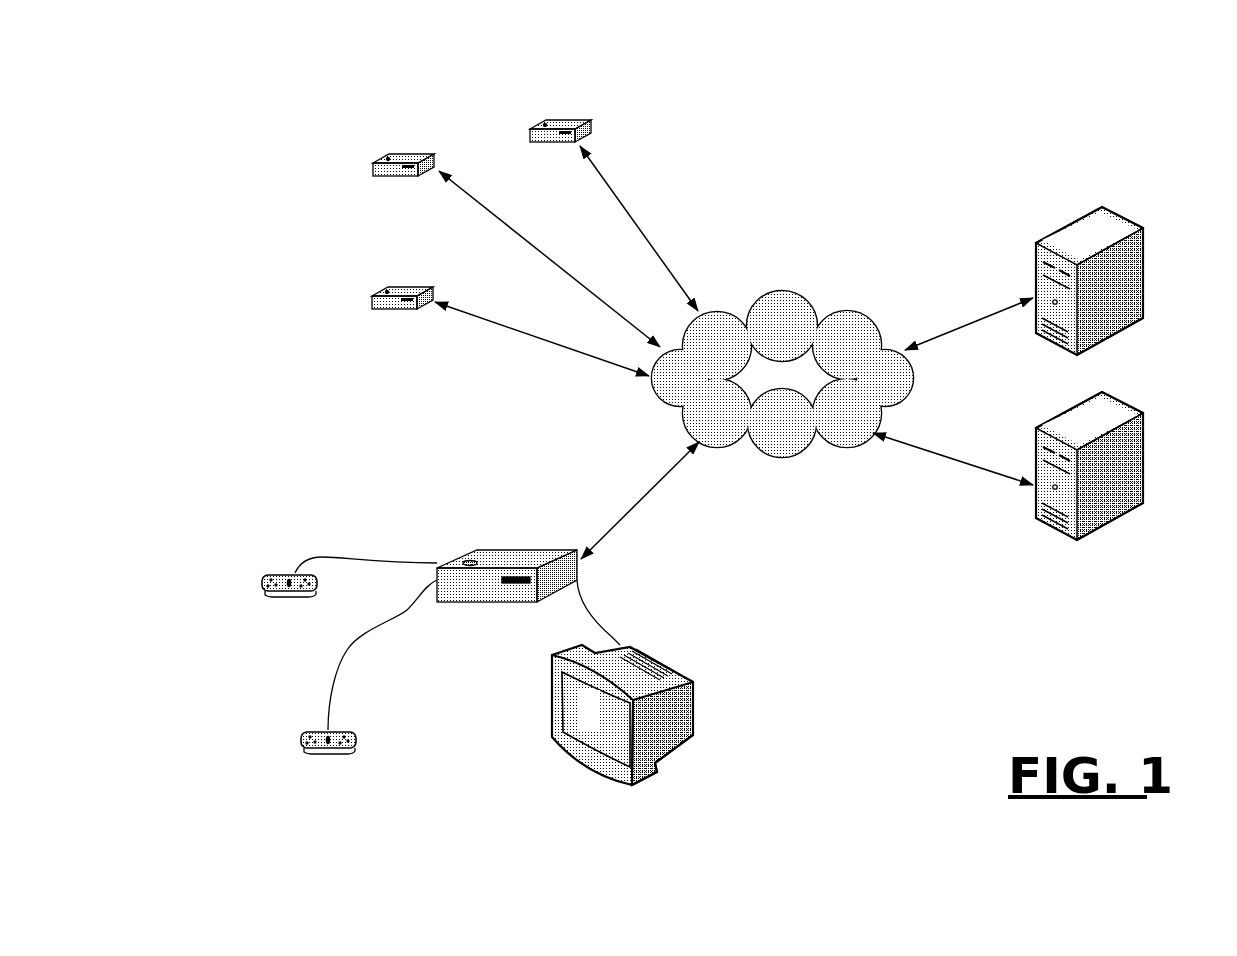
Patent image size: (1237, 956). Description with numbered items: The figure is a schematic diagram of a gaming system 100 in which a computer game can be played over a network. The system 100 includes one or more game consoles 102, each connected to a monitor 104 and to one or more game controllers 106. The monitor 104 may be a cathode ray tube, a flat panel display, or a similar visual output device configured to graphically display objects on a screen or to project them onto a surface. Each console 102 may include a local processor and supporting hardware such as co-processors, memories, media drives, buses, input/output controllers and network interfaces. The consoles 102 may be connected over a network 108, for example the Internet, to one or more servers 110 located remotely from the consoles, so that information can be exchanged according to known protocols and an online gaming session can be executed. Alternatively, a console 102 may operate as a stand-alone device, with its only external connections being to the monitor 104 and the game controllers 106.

The gaming system 100 is at (853, 126).
The game console 102 is at (530, 130).
The monitor 104 is at (694, 710).
The game controller 106 is at (265, 593).
The network 108 is at (797, 388).
The server 110 is at (1143, 318).